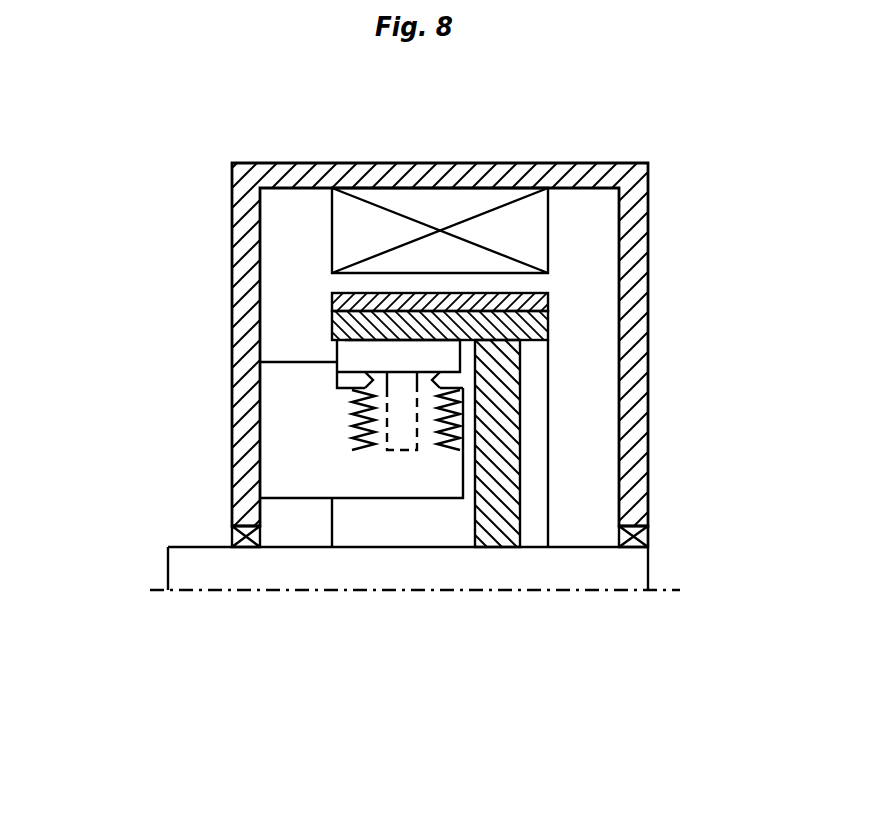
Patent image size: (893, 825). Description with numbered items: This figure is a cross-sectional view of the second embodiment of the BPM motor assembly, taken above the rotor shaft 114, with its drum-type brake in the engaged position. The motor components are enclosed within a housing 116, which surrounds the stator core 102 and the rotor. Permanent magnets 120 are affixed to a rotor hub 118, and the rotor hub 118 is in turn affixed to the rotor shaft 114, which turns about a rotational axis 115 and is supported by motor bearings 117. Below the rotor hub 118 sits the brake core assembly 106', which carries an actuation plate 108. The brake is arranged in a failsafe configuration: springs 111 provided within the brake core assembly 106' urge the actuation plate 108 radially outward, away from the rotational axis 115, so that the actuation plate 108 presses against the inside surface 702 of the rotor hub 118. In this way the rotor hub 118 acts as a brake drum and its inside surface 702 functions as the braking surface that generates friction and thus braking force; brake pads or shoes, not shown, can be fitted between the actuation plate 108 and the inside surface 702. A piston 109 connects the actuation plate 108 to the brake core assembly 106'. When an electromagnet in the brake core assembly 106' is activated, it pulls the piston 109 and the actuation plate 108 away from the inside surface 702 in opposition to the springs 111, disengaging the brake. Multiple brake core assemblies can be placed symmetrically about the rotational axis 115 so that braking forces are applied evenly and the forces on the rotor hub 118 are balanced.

The stator core 102 is at (430, 205).
The brake core assembly 106' is at (274, 454).
The actuation plate 108 is at (360, 350).
The piston 109 is at (398, 378).
The springs 111 is at (357, 452).
The rotor shaft 114 is at (560, 577).
The rotational axis 115 is at (150, 586).
The housing 116 is at (648, 163).
The motor bearings 117 is at (238, 540).
The rotor hub 118 is at (522, 323).
The permanent magnets 120 is at (540, 300).
The inside surface 702 is at (357, 340).